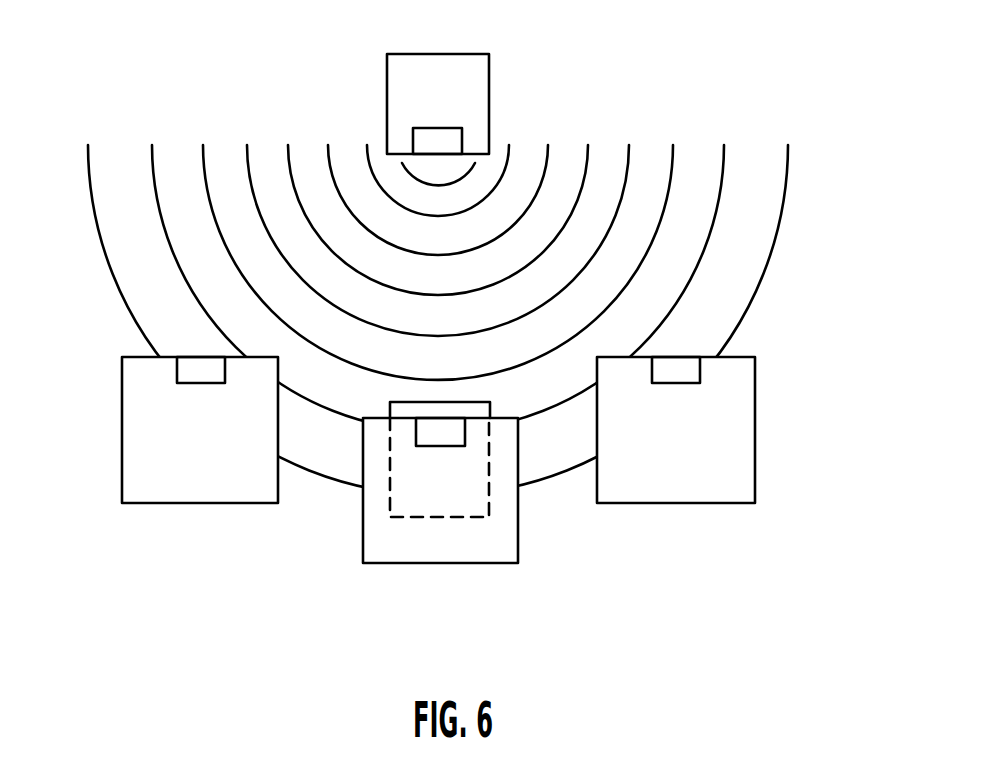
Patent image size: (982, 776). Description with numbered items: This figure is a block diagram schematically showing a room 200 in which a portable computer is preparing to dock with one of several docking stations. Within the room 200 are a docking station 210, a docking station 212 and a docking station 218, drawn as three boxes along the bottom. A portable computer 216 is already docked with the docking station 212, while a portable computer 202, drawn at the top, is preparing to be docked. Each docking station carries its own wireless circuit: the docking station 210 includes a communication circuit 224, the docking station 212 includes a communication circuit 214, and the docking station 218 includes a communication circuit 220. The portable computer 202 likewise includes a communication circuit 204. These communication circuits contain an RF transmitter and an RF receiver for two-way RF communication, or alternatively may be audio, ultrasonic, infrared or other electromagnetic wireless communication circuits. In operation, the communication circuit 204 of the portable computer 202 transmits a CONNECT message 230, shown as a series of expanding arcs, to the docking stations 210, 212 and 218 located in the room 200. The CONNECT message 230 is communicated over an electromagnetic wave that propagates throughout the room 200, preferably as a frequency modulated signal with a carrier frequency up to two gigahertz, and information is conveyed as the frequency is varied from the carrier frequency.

The room 200 is at (379, 134).
The portable computer 202 is at (489, 58).
The communication circuit 204 is at (440, 128).
The docking station 210 is at (122, 503).
The docking station 212 is at (363, 567).
The communication circuit 214 is at (400, 410).
The portable computer 216 is at (490, 403).
The docking station 218 is at (755, 503).
The communication circuit 220 is at (700, 357).
The communication circuit 224 is at (223, 360).
The CONNECT message 230 is at (799, 141).